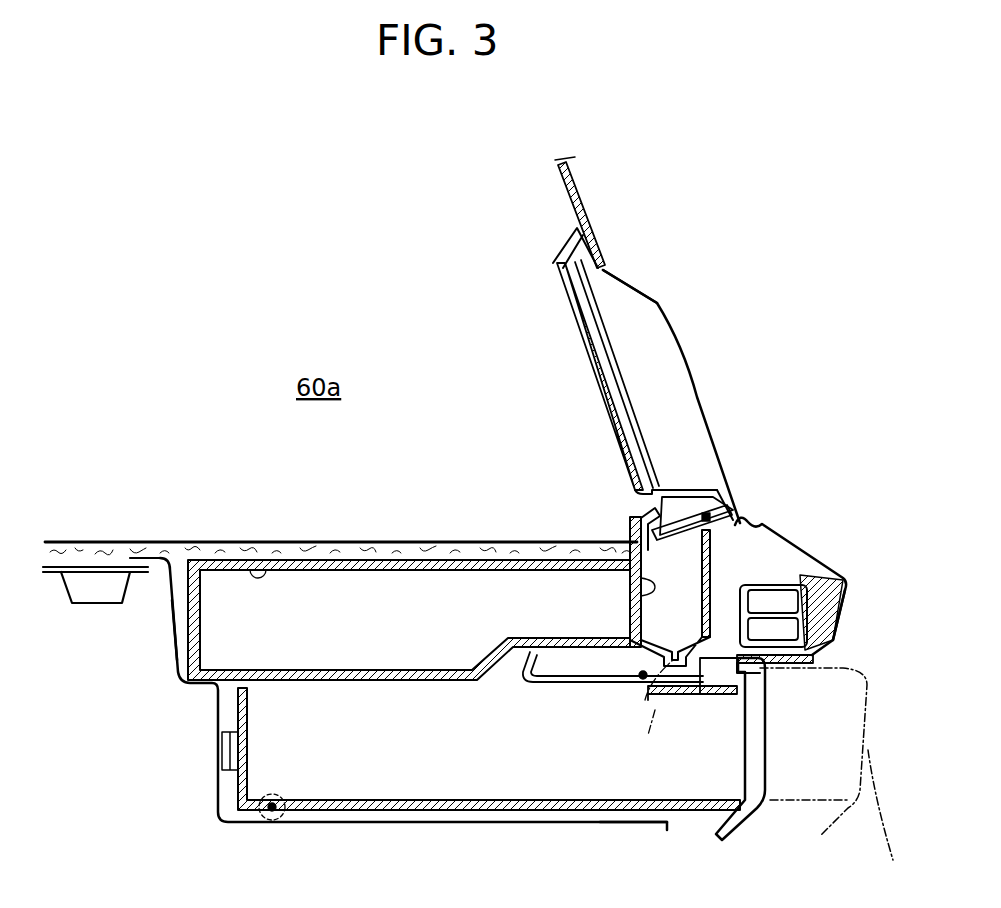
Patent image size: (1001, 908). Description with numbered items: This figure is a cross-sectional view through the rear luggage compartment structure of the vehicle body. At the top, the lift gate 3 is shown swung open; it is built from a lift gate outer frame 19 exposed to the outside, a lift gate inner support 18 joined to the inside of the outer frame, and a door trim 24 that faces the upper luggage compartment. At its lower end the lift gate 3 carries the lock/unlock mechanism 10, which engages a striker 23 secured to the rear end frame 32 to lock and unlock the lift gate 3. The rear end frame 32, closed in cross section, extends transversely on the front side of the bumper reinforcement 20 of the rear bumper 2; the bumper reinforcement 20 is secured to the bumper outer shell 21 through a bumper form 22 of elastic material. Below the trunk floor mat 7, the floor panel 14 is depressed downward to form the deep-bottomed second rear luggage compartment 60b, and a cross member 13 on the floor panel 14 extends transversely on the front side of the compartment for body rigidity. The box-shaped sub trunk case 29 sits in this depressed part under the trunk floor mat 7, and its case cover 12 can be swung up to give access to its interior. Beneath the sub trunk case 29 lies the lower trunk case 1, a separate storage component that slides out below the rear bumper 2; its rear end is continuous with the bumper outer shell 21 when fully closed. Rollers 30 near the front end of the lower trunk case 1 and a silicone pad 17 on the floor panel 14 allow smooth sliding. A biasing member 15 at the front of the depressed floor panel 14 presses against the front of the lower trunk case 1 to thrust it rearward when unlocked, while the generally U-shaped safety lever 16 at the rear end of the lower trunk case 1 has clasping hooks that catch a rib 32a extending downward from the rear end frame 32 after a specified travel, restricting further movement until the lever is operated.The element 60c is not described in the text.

The lower trunk case 1 is at (754, 775).
The rear bumper 2 is at (812, 543).
The lift gate 3 is at (695, 408).
The trunk floor mat 7 is at (122, 548).
The lock/unlock mechanism 10 is at (680, 512).
The case cover 12 is at (263, 580).
The cross member 13 is at (83, 598).
The floor panel 14 is at (178, 655).
The biasing member 15 is at (232, 773).
The safety lever 16 is at (570, 685).
The silicone pad 17 is at (635, 815).
The lift gate inner support 18 is at (587, 343).
The lift gate outer frame 19 is at (657, 303).
The bumper reinforcement 20 is at (770, 587).
The bumper outer shell 21 is at (840, 585).
The bumper form 22 is at (837, 620).
The striker 23 is at (637, 527).
The door trim 24 is at (565, 303).
The sub trunk case 29 is at (409, 620).
The roller 30 is at (275, 820).
The rear end frame 32 is at (628, 585).
The rib 32a is at (697, 697).
The second rear luggage compartment 60b is at (176, 592).
The floor lower wall 60c is at (232, 717).